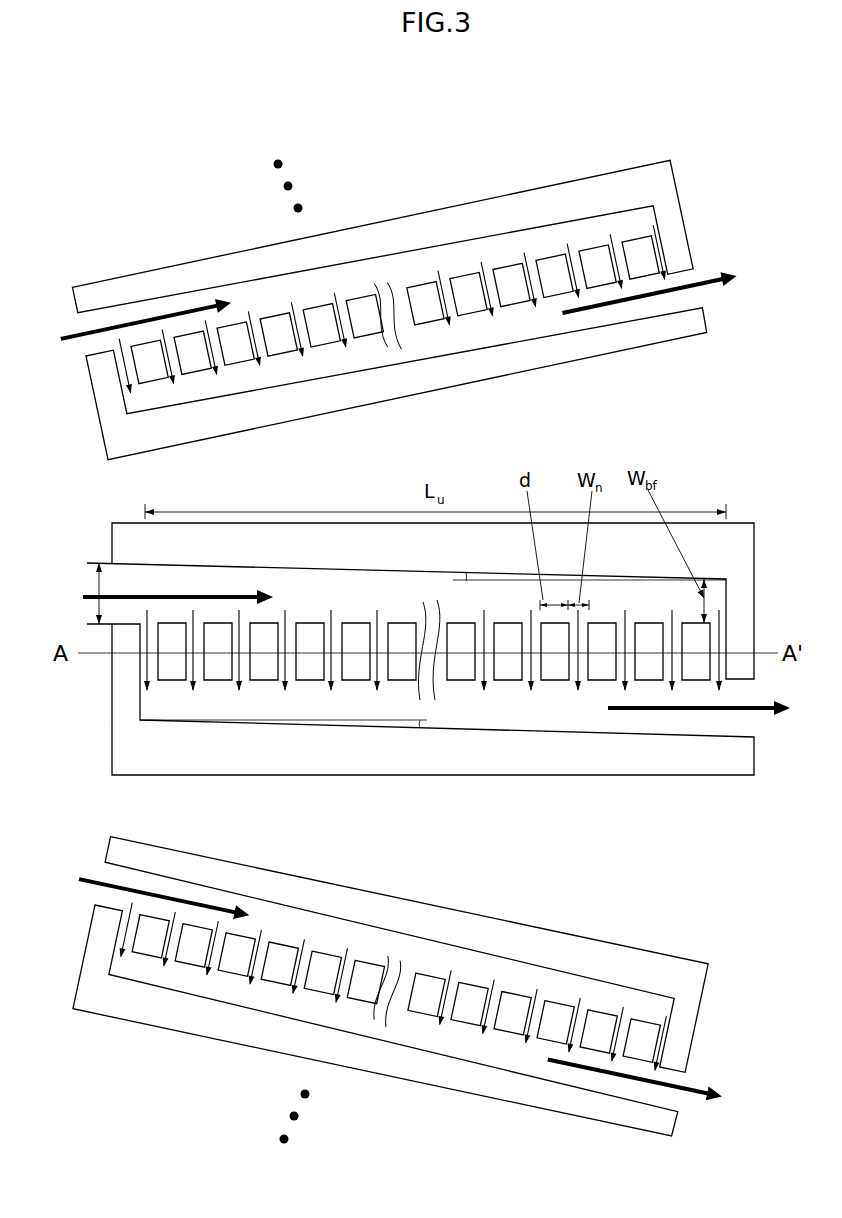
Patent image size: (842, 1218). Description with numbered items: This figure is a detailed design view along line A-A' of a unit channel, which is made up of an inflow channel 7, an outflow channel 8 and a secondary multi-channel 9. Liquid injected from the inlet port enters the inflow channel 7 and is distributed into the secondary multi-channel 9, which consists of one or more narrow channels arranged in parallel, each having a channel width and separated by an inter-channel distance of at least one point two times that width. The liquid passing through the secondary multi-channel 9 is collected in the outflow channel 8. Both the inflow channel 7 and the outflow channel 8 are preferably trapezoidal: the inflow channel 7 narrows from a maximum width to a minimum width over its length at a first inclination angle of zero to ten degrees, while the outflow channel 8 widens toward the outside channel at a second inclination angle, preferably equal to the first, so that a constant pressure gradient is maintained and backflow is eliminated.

The inflow channel 7 is at (320, 585).
The outflow channel 8 is at (515, 708).
The secondary multi-channel 9 is at (325, 665).